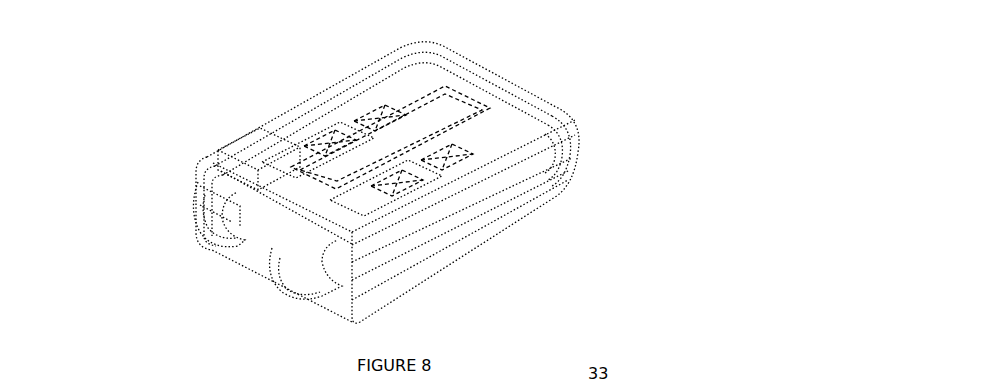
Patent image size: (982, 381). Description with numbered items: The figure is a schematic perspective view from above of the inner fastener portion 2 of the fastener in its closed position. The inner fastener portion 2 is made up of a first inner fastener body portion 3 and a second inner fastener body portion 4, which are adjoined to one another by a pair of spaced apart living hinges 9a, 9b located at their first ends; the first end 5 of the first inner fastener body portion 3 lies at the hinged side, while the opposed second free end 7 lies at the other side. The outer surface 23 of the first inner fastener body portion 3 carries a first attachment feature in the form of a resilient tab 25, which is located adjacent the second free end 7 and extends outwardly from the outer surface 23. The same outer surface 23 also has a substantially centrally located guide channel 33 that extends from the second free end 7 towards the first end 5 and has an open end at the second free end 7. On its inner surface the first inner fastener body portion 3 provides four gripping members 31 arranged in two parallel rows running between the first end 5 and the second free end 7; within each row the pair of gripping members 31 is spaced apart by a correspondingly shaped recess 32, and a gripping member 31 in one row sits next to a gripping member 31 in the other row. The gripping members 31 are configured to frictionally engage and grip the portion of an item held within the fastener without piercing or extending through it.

The inner fastener portion 2 is at (374, 164).
The first inner fastener body portion 3 is at (298, 143).
The second inner fastener body portion 4 is at (448, 247).
The first end 5 is at (217, 188).
The second free end 7 is at (473, 67).
The living hinge 9a is at (217, 218).
The living hinge 9b is at (298, 273).
The outer surface 23 is at (528, 123).
The resilient tab 25 is at (445, 97).
The gripping member 31 is at (433, 157).
The recess 32 is at (413, 183).
The guide channel 33 is at (270, 217).